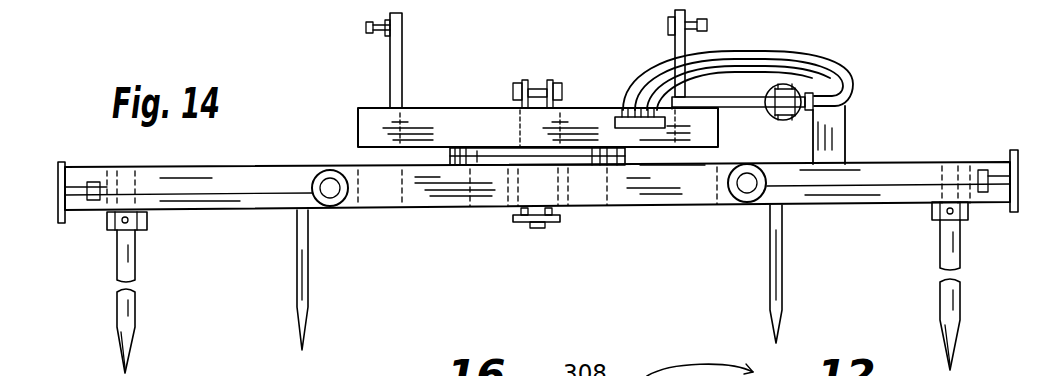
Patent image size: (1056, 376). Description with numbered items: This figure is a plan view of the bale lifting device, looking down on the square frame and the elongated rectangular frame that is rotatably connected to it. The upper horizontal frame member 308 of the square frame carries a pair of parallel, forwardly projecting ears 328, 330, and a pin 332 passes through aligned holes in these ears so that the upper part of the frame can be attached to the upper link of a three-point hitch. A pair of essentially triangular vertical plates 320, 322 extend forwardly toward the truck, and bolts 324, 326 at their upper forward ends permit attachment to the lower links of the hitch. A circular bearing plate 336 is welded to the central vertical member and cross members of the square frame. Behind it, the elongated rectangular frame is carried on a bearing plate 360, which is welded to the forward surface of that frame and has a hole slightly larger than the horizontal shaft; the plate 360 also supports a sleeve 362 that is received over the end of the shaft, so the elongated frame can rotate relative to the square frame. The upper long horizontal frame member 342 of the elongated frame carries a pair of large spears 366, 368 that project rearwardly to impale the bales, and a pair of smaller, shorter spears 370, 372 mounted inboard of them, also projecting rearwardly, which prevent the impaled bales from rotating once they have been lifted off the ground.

The upper horizontal frame member 308 is at (438, 115).
The vertical plate 320 is at (675, 42).
The vertical plate 322 is at (391, 70).
The bolt 324 is at (710, 25).
The bolt 326 is at (366, 28).
The ear 328 is at (552, 82).
The ear 330 is at (521, 82).
The pin 332 is at (541, 88).
The circular bearing plate 336 is at (662, 150).
The long horizontal frame member 342 is at (445, 208).
The bearing plate 360 is at (628, 149).
The sleeve 362 is at (515, 212).
The large spear 366 is at (135, 315).
The large spear 368 is at (962, 305).
The smaller spear 370 is at (308, 284).
The smaller spear 372 is at (768, 278).